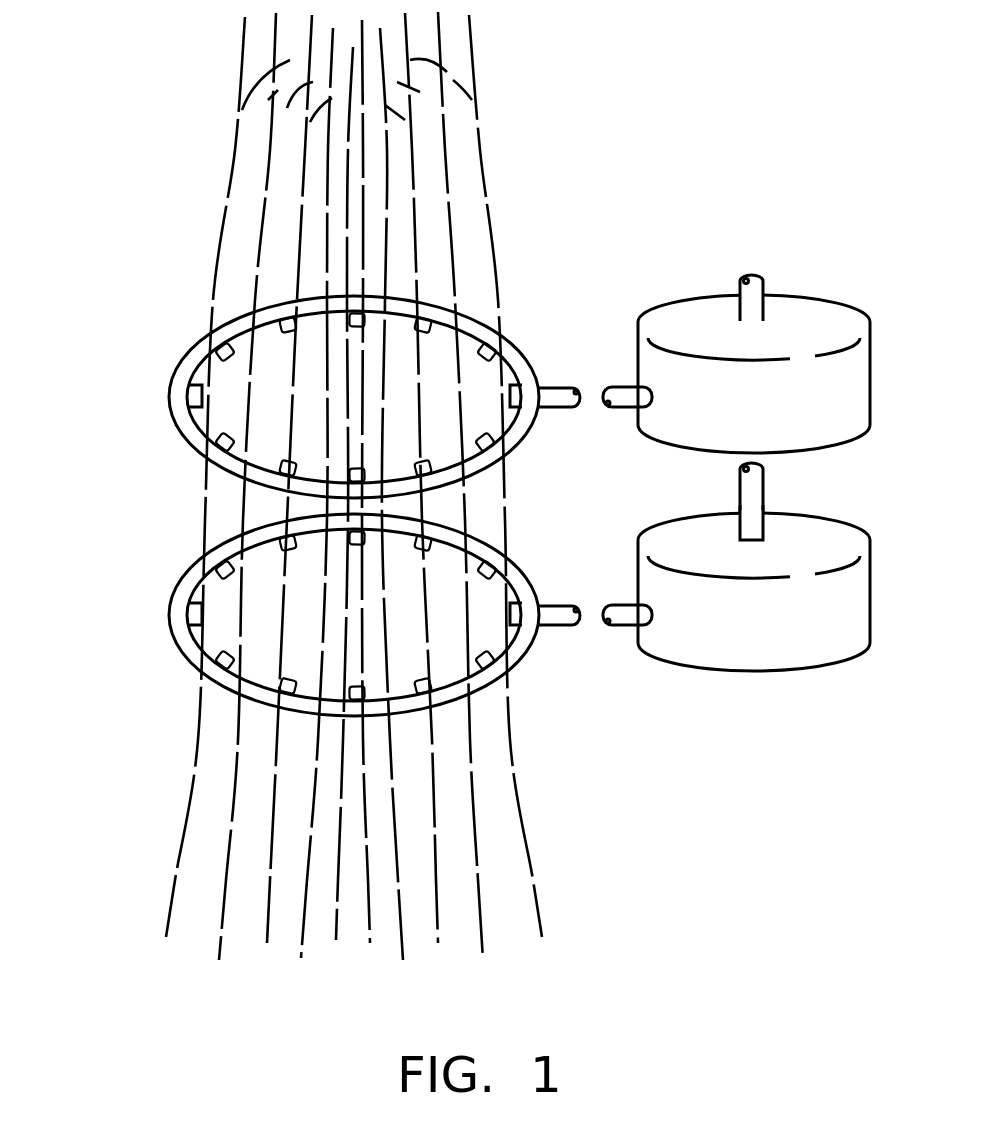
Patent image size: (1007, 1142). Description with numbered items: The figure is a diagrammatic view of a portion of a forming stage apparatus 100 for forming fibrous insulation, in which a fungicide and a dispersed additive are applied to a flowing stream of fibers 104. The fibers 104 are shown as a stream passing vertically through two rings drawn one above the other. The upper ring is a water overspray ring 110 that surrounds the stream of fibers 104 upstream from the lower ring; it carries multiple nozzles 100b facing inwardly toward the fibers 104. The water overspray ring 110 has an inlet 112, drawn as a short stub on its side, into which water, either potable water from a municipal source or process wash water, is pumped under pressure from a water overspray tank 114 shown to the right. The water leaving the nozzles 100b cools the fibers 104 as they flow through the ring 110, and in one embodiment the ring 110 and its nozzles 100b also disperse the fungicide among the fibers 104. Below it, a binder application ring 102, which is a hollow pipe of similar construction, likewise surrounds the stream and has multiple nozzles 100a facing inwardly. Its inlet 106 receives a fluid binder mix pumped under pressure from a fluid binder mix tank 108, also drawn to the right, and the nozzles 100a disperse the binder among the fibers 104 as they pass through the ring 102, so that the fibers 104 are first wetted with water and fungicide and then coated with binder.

The forming stage apparatus 100 is at (133, 228).
The nozzles 100a is at (290, 688).
The nozzles 100b is at (200, 452).
The binder application ring 102 is at (178, 625).
The fibers 104 is at (242, 532).
The inlet 106 is at (557, 605).
The fluid binder mix tank 108 is at (740, 658).
The water overspray ring 110 is at (184, 368).
The inlet 112 is at (558, 387).
The water overspray tank 114 is at (793, 442).